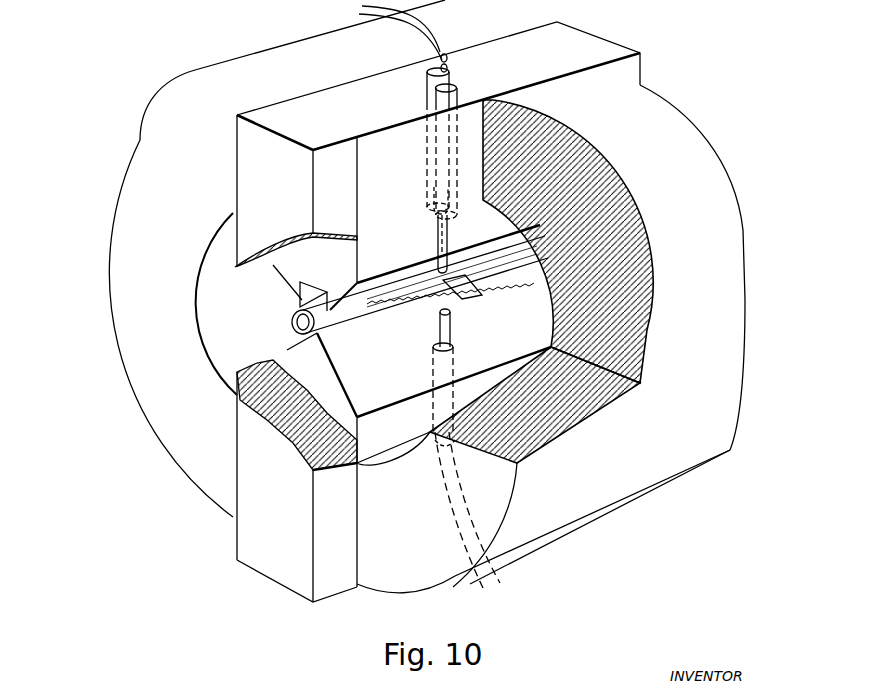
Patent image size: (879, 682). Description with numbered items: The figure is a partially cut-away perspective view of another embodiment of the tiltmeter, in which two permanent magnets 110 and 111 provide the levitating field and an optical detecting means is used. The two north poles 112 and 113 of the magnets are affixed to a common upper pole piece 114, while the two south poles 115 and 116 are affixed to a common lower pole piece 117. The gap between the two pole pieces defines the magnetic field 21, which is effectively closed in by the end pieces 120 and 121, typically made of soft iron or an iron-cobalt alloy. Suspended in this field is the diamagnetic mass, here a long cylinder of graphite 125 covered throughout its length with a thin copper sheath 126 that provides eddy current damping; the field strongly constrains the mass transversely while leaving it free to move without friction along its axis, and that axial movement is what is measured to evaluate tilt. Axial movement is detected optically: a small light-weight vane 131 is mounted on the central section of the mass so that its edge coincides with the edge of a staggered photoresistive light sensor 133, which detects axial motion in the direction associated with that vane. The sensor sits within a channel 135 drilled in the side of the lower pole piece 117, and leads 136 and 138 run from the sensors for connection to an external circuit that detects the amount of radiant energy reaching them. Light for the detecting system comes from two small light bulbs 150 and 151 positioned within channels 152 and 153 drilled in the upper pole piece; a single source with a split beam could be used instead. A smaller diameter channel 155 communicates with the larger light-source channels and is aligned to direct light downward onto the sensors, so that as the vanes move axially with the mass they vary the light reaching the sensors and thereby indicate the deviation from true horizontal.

The magnetic field 21 is at (300, 297).
The permanent magnet 110 is at (125, 322).
The permanent magnet 111 is at (700, 157).
The north pole 112 is at (375, 64).
The north pole 113 is at (600, 112).
The upper pole piece 114 is at (330, 272).
The south pole 115 is at (206, 440).
The south pole 116 is at (440, 544).
The lower pole piece 117 is at (325, 388).
The end piece 120 is at (290, 542).
The end piece 121 is at (608, 50).
The cylinder of graphite 125 is at (493, 263).
The copper sheath 126 is at (291, 322).
The vane 131 is at (470, 294).
The photoresistive light sensor 133 is at (455, 316).
The channel 135 is at (432, 378).
The lead 136 is at (490, 590).
The lead 138 is at (533, 553).
The light bulb 150 is at (430, 180).
The light bulb 151 is at (434, 210).
The channel 152 is at (450, 67).
The channel 153 is at (459, 88).
The smaller diameter channel 155 is at (436, 242).